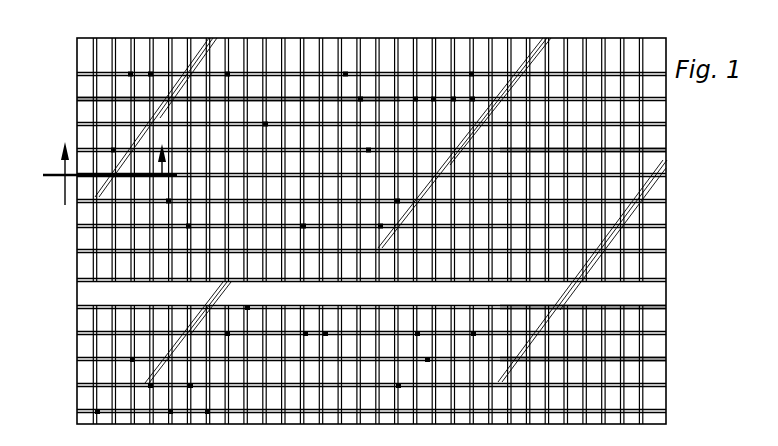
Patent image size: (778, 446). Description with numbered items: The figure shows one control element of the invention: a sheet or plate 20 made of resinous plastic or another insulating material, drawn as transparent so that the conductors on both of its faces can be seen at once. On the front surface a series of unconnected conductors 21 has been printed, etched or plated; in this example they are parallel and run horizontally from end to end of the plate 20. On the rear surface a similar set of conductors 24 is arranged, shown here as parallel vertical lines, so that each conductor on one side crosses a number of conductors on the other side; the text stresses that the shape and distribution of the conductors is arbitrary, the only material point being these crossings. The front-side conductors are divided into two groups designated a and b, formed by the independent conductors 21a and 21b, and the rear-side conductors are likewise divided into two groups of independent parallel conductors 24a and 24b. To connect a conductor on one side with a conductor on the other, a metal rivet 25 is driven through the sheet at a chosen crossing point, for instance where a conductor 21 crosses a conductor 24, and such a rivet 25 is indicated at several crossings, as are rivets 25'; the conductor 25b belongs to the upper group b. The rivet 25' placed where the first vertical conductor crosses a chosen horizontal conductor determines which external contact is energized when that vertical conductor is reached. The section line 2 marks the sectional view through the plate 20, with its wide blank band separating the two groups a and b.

The insulating sheet or plate 20 is at (653, 400).
The conductors 21 is at (652, 250).
The independent conductors 21a is at (652, 360).
The independent conductors 21b is at (90, 96).
The conductors 24 is at (415, 53).
The independent parallel conductors 24a is at (307, 392).
The independent parallel conductors 24b is at (203, 50).
The metal rivet 25 is at (371, 185).
The rivet 25' is at (348, 311).
The upper weft yarn 25b is at (205, 98).
The group of conductors a is at (658, 323).
The group of conductors b is at (656, 148).
The section line 2- 2 is at (109, 173).